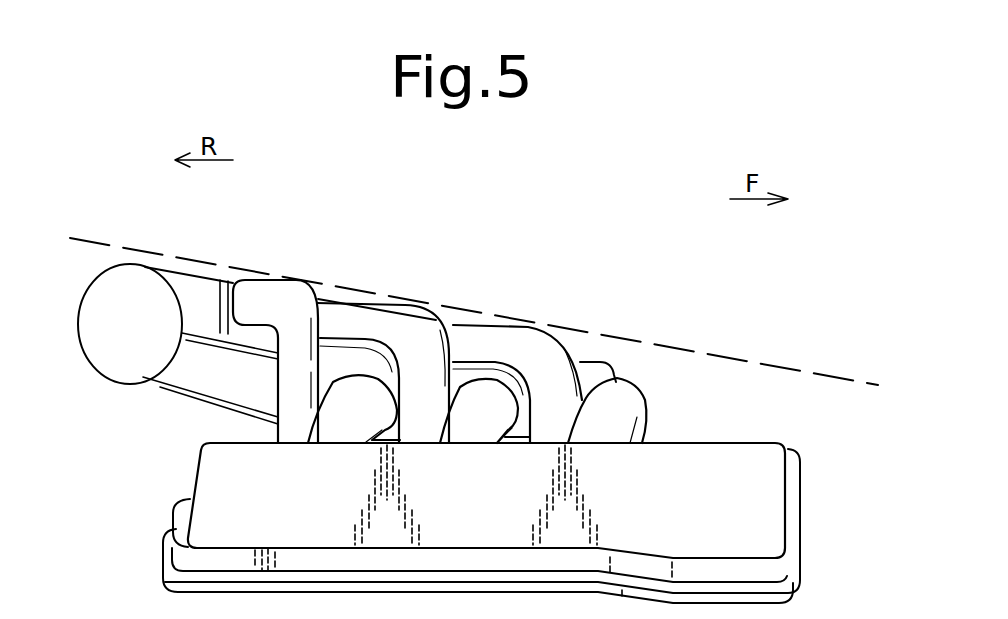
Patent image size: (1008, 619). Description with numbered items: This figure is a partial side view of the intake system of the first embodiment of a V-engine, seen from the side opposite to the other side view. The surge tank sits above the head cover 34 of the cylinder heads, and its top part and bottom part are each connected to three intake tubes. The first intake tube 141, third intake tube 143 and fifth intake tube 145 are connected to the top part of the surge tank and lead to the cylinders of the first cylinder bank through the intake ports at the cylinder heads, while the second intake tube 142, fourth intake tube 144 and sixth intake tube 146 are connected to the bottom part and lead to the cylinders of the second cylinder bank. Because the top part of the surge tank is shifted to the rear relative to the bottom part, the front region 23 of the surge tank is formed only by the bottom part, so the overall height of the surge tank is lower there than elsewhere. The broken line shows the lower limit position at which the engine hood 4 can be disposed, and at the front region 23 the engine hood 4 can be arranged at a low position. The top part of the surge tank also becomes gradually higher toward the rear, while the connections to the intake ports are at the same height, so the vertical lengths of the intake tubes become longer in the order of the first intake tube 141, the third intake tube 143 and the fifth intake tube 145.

The engine hood 4 is at (807, 370).
The front region 23 is at (590, 350).
The head cover 34 is at (763, 537).
The first intake tube 141 is at (513, 340).
The second intake tube 142 is at (612, 423).
The third intake tube 143 is at (398, 323).
The fourth intake tube 144 is at (463, 421).
The fifth intake tube 145 is at (274, 300).
The sixth intake tube 146 is at (330, 421).